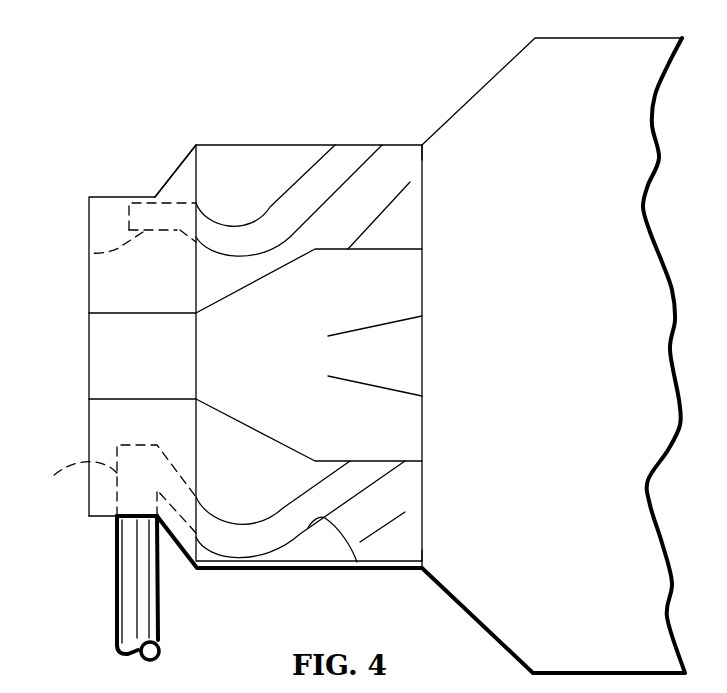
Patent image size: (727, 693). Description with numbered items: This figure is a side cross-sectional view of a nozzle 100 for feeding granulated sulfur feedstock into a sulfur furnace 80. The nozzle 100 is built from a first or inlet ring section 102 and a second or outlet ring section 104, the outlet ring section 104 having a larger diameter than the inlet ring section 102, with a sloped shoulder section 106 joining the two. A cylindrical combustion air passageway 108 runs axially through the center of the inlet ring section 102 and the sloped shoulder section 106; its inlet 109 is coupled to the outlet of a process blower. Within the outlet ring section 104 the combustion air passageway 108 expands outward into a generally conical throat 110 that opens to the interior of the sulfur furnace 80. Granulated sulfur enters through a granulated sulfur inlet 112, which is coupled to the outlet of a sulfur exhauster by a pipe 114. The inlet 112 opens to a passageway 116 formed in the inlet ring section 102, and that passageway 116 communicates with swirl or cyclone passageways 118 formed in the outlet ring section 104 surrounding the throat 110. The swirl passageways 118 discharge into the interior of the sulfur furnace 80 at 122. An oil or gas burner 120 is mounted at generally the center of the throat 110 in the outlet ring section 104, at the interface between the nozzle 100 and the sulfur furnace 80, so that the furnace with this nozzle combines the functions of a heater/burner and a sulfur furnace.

The sulfur furnace 80 is at (643, 37).
The nozzle 100 is at (295, 97).
The inlet ring section 102 is at (126, 197).
The outlet ring section 104 is at (307, 145).
The sloped shoulder section 106 is at (170, 178).
The cylindrical combustion air passageway 108 is at (115, 400).
The inlet 109 is at (89, 313).
The conical throat 110 is at (230, 417).
The granulated sulfur inlet 112 is at (116, 517).
The pipe 114 is at (117, 573).
The passageway 116 is at (80, 252).
The swirl or cyclone passageways 118 is at (395, 198).
The oil or gas burner 120 is at (397, 393).
The opening of passageways to furnace interior 122 is at (425, 157).